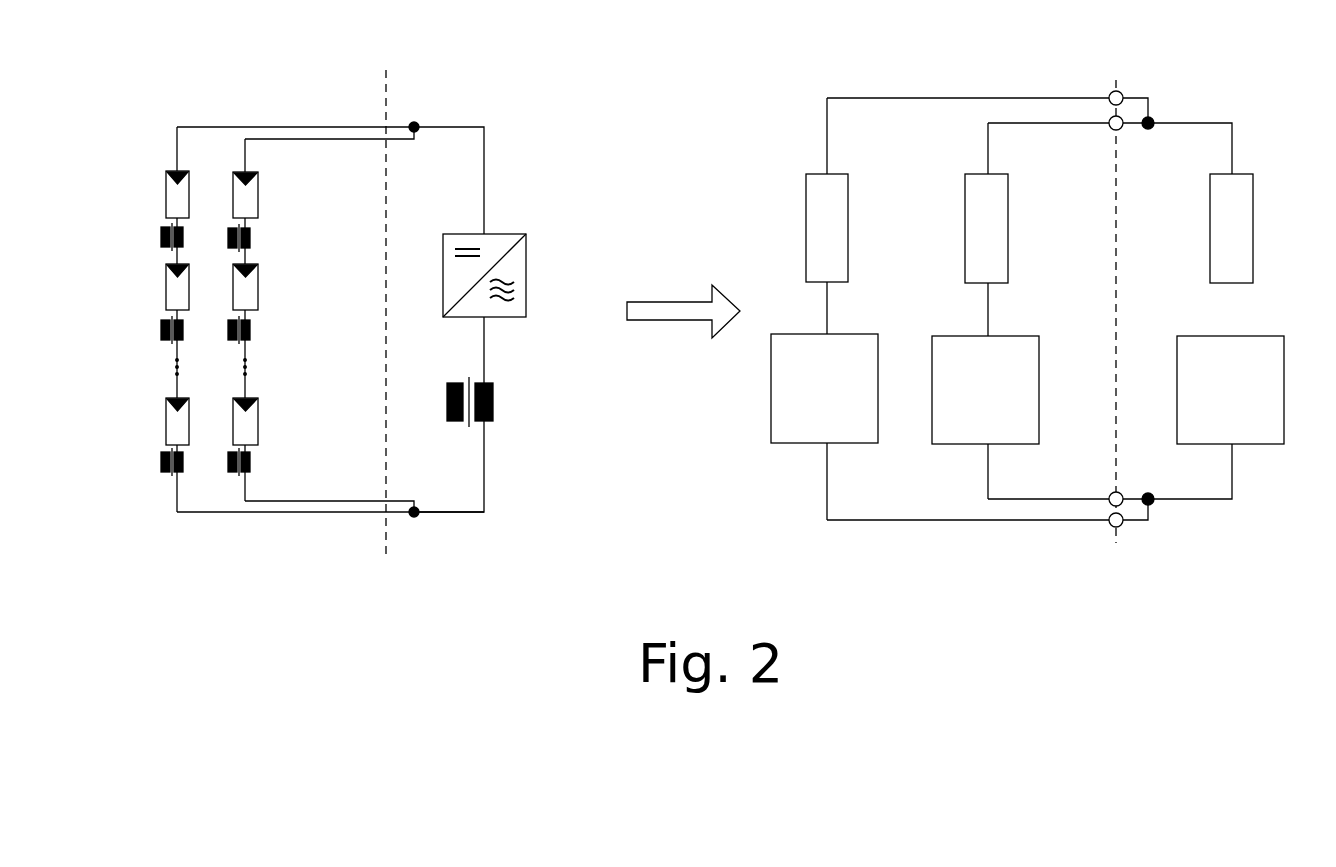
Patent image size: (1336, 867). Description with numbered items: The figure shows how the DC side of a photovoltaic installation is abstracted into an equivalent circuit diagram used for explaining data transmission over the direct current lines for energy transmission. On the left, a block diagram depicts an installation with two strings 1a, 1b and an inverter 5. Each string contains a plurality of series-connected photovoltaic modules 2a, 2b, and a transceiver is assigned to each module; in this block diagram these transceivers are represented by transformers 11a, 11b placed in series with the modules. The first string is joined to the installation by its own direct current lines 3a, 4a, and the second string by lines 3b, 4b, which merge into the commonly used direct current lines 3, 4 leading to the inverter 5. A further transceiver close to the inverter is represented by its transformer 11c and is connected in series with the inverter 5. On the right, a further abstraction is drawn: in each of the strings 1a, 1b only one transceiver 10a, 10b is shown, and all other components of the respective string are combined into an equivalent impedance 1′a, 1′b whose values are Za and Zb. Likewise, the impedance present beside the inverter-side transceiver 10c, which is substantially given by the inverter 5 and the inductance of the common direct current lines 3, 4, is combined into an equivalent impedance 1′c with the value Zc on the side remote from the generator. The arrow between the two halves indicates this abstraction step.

The string 1a is at (162, 500).
The string 1b is at (277, 478).
The photovoltaic modules 2a is at (165, 187).
The photovoltaic modules 2b is at (258, 200).
The direct current line 3 is at (484, 147).
The direct current line of first string 3a is at (197, 127).
The direct current line of second string 3b is at (277, 139).
The direct current line 4 is at (484, 465).
The direct current line of first string 4a is at (240, 512).
The direct current line of second string 4b is at (357, 502).
The inverter 5 is at (508, 234).
The transformer 11a is at (162, 207).
The transformer 11b is at (255, 247).
The transformer 11c is at (497, 400).
The equivalent impedance 1′a is at (805, 193).
The equivalent impedance 1′b is at (1008, 200).
The equivalent impedance 1′c is at (1253, 207).
The transceiver 10a is at (795, 443).
The transceiver 10b is at (962, 444).
The transceiver 10c is at (1284, 390).